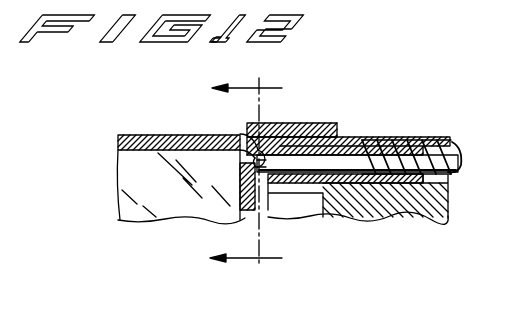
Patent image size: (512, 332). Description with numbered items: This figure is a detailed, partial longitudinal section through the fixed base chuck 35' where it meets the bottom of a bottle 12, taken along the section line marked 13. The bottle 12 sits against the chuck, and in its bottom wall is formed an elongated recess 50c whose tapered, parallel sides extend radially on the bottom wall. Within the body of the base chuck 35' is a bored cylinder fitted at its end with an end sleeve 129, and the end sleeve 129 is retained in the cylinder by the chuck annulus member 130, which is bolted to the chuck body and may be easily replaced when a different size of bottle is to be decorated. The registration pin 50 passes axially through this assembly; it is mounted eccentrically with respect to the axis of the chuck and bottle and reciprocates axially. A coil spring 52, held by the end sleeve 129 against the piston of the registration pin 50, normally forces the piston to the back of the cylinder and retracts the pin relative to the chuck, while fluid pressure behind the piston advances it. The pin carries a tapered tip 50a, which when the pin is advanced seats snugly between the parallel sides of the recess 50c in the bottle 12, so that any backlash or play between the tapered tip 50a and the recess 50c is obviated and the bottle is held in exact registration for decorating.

The bottle 12 is at (126, 134).
The section line 13- 13 is at (221, 176).
The registration pin 50 is at (300, 167).
The tapered tip 50a is at (240, 160).
The recess 50c is at (242, 187).
The chuck annulus member 130 is at (282, 133).
The end sleeve 129 is at (350, 143).
The coil spring 52 is at (446, 150).
The base chuck 35' is at (358, 220).